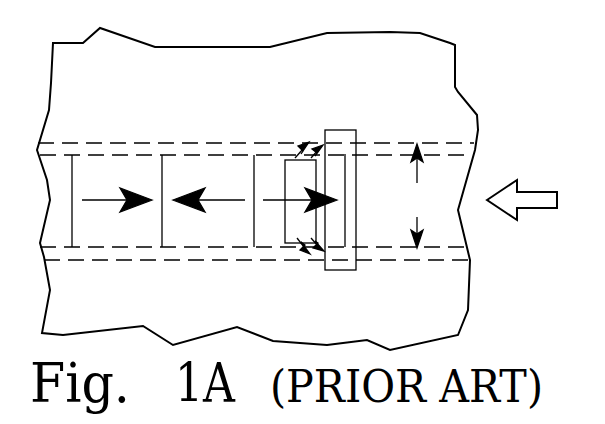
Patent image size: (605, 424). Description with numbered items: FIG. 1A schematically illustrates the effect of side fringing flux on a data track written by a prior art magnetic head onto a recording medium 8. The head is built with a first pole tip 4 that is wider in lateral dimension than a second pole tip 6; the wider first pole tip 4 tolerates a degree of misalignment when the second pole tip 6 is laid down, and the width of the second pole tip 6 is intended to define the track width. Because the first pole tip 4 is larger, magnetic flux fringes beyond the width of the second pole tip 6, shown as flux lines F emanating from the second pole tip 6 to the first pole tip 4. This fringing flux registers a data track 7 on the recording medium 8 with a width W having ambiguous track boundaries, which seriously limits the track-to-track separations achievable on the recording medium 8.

The recording medium 8 is at (217, 58).
The data track 7 is at (55, 192).
The second pole tip 6 is at (285, 171).
The first pole tip 4 is at (338, 130).
The flux lines F is at (322, 142).
The width W is at (417, 196).